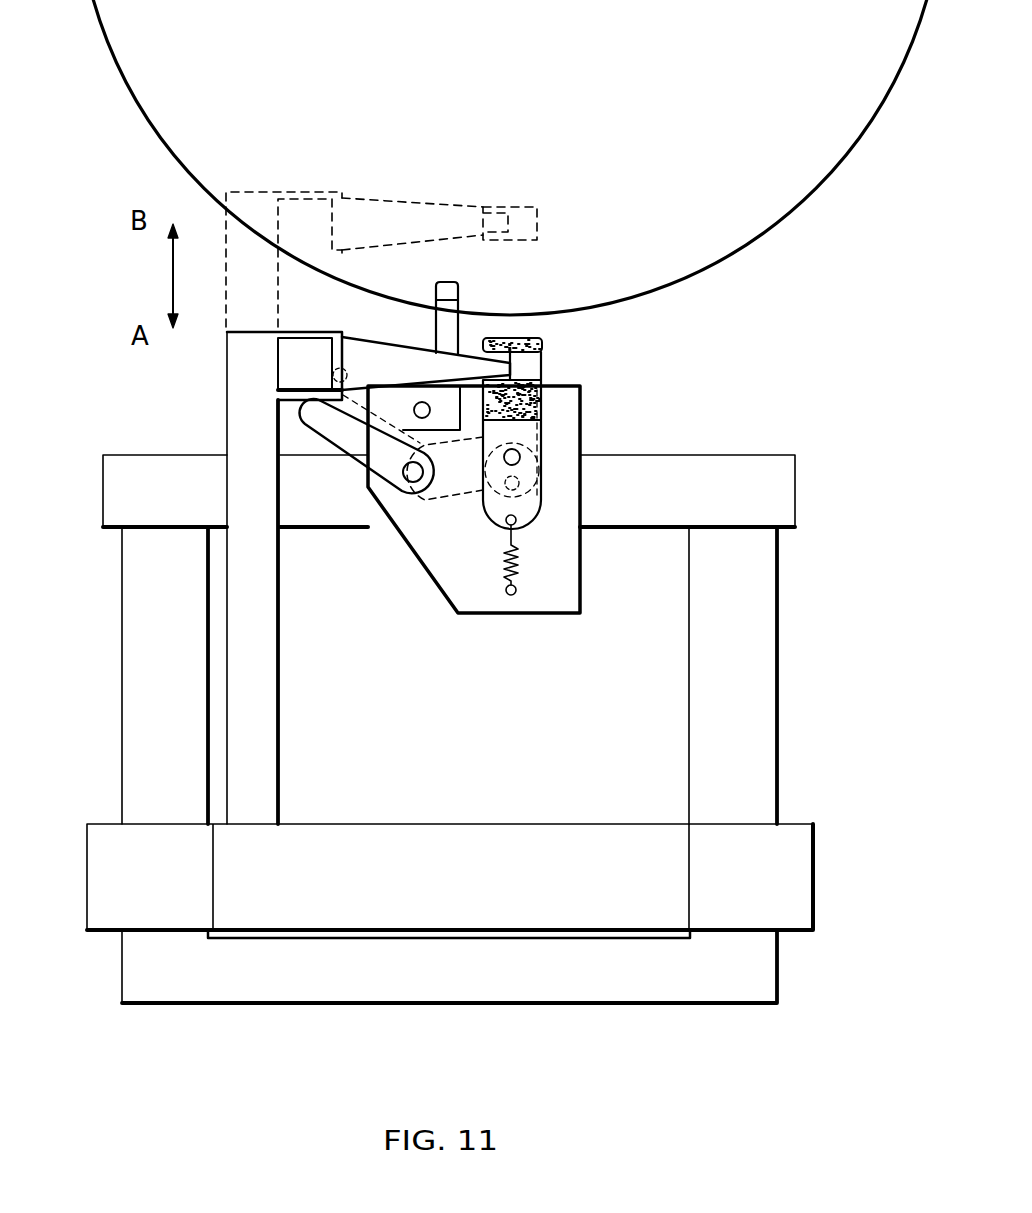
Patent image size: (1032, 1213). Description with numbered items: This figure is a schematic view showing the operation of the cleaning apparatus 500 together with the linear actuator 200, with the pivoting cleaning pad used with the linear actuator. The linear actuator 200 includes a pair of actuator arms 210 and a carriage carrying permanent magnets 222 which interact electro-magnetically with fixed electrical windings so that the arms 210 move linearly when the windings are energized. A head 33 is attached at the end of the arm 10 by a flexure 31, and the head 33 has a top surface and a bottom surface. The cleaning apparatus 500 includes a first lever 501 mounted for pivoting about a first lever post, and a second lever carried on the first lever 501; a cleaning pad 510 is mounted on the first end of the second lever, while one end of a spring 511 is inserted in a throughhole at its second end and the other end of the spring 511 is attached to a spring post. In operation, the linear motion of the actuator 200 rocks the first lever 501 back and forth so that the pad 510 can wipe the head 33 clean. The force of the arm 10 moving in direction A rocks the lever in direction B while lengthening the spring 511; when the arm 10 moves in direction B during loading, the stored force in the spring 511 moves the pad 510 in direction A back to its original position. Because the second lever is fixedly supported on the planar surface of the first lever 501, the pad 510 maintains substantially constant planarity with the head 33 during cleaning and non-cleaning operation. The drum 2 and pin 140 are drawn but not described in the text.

The photosensitive drum 2 is at (742, 247).
The arm 10 is at (277, 420).
The flexure 31 is at (392, 196).
The head 33 is at (533, 205).
The pin 140 is at (462, 315).
The linear actuator 200 is at (811, 655).
The actuator arm 210 is at (281, 714).
The permanent magnet 222 is at (117, 918).
The cleaning apparatus 500 is at (588, 425).
The first lever 501 is at (349, 478).
The cleaning pad 510 is at (560, 386).
The spring 511 is at (517, 573).